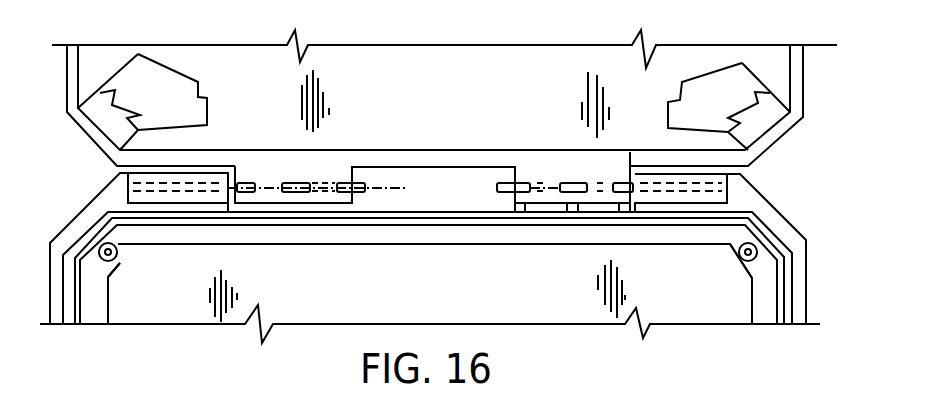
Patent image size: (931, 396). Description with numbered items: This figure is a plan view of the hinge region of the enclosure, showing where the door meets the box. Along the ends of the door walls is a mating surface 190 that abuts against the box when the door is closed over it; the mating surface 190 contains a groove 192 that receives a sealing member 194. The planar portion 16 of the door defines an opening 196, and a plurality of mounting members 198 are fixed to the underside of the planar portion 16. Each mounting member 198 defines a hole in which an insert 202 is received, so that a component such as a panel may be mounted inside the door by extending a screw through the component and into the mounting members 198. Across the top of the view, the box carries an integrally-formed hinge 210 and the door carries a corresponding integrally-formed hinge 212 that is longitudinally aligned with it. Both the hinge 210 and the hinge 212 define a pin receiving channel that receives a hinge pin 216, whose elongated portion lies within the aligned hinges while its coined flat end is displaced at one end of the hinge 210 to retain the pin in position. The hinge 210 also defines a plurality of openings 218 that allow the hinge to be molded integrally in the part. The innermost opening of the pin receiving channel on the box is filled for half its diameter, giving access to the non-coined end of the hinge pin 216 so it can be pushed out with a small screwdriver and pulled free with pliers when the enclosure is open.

The planar portion 16 is at (766, 315).
The mating surface 190 is at (115, 190).
The groove 192 is at (63, 303).
The sealing member 194 is at (80, 296).
The opening 196 is at (557, 303).
The mounting member 198 is at (122, 263).
The insert 202 is at (118, 245).
The hinge 210 is at (302, 166).
The hinge 212 is at (135, 178).
The hinge pin 216 is at (497, 187).
The opening 218 is at (253, 183).